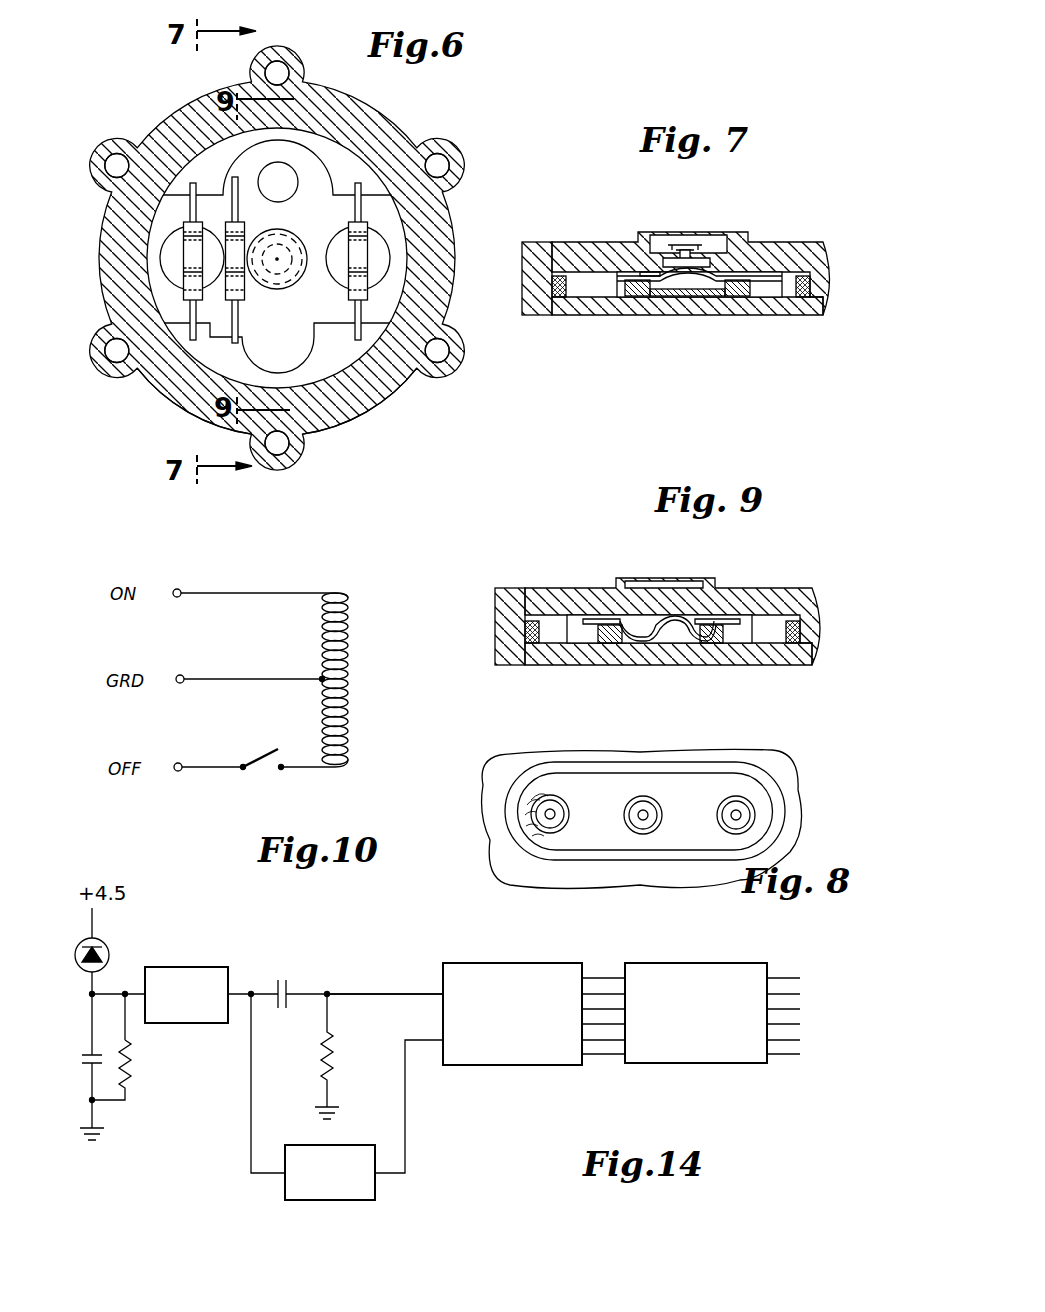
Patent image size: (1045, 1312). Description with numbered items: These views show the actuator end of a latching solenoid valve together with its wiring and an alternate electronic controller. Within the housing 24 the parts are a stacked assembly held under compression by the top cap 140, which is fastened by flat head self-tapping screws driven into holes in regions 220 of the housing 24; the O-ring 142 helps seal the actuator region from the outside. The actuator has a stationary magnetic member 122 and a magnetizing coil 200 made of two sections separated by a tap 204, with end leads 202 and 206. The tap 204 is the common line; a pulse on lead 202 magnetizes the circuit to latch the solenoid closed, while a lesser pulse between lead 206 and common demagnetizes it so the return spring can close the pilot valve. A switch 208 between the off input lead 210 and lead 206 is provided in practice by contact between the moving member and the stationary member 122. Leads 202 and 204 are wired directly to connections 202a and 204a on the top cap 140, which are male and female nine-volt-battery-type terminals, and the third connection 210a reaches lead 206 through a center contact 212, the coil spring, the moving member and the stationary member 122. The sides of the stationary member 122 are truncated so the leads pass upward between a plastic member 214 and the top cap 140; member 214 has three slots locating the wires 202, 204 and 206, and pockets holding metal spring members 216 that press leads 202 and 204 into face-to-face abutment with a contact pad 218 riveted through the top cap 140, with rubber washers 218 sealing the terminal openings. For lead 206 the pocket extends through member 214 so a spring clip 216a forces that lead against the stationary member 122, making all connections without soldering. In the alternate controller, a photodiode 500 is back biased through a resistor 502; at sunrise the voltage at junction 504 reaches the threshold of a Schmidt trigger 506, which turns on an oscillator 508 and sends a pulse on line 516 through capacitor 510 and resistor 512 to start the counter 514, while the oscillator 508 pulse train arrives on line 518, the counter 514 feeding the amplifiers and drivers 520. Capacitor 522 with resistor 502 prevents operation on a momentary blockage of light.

In FIG. 7, the housing 24 is at (522, 300).
In FIG. 9, the housing 24 is at (495, 615).
In FIG. 6, the stationary magnetic member 122 is at (371, 414).
In FIG. 7, the stationary magnetic member 122 is at (765, 318).
In FIG. 9, the stationary magnetic member 122 is at (760, 663).
In FIG. 6, the top cap 140 is at (446, 227).
In FIG. 7, the top cap 140 is at (770, 246).
In FIG. 9, the top cap 140 is at (741, 590).
In FIG. 7, the O-ring 142 is at (559, 276).
In FIG. 9, the O-ring 142 is at (531, 618).
In FIG. 10, the magnetizing coil 200 is at (361, 650).
In FIG. 6, the end lead 202 is at (196, 337).
In FIG. 7, the end lead 202 is at (640, 276).
In FIG. 10, the end lead 202 is at (270, 592).
In FIG. 7, the electrical connection 202a is at (660, 236).
In FIG. 8, the electrical connection 202a is at (552, 795).
In FIG. 6, the tap 204 is at (352, 190).
In FIG. 10, the tap 204 is at (258, 678).
In FIG. 8, the electrical connection 204a is at (645, 796).
In FIG. 6, the end lead 206 is at (235, 180).
In FIG. 9, the end lead 206 is at (592, 619).
In FIG. 10, the end lead 206 is at (304, 769).
In FIG. 10, the switch 208 is at (260, 750).
In FIG. 10, the off input lead 210 is at (196, 770).
In FIG. 8, the third connection 210a is at (746, 796).
In FIG. 6, the center contact 212 is at (285, 274).
In FIG. 6, the plastic member 214 is at (291, 437).
In FIG. 7, the plastic member 214 is at (638, 297).
In FIG. 9, the plastic member 214 is at (606, 643).
In FIG. 6, the metal spring member 216 is at (187, 226).
In FIG. 7, the metal spring member 216 is at (672, 298).
In FIG. 6, the spring clip 216a is at (247, 223).
In FIG. 9, the spring clip 216a is at (645, 641).
In FIG. 7, the contact pad 218 is at (740, 262).
In FIG. 6, the regions of valve housing 220 is at (292, 54).
In FIG. 14, the photodiode 500 is at (104, 944).
In FIG. 14, the resistor 502 is at (131, 1070).
In FIG. 14, the junction 504 is at (88, 994).
In FIG. 14, the Schmidt trigger 506 is at (196, 967).
In FIG. 14, the oscillator 508 is at (294, 1201).
In FIG. 14, the capacitor 510 is at (290, 980).
In FIG. 14, the resistor 512 is at (335, 1060).
In FIG. 14, the counter 514 is at (528, 944).
In FIG. 14, the line 516 is at (373, 993).
In FIG. 14, the line 518 is at (420, 1103).
In FIG. 14, the amplifiers and drivers 520 is at (713, 942).
In FIG. 14, the capacitor 522 is at (82, 1060).